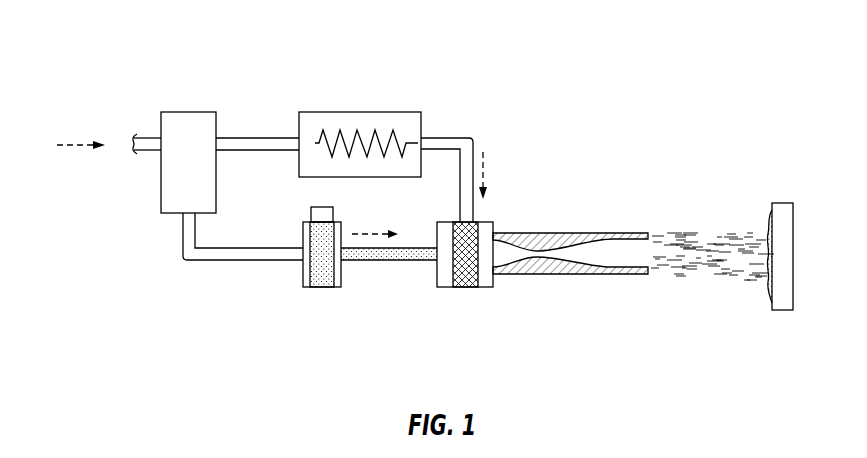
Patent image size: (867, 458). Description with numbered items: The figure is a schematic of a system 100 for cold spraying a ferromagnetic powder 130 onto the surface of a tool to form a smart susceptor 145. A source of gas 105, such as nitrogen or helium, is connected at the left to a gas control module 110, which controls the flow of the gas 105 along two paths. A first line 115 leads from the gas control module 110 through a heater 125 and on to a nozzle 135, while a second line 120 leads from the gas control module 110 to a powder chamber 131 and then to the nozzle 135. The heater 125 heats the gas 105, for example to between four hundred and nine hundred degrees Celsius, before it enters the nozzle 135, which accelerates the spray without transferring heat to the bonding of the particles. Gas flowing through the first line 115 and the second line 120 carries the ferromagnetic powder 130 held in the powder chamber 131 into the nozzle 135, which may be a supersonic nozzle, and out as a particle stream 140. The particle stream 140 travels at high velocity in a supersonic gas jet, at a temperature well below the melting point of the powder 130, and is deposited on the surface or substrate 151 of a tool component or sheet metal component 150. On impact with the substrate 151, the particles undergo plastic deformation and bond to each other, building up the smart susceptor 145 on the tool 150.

The system 100 is at (601, 56).
The gas 105 is at (75, 145).
The gas control module 110 is at (161, 190).
The first line 115 is at (260, 137).
The second line 120 is at (262, 247).
The heater 125 is at (321, 112).
The ferromagnetic powder 130 is at (322, 278).
The powder chamber 131 is at (303, 275).
The nozzle 135 is at (558, 258).
The particle stream 140 is at (697, 236).
The smart susceptor 145 is at (756, 291).
The tool component 150 is at (785, 203).
The substrate 151 is at (770, 210).